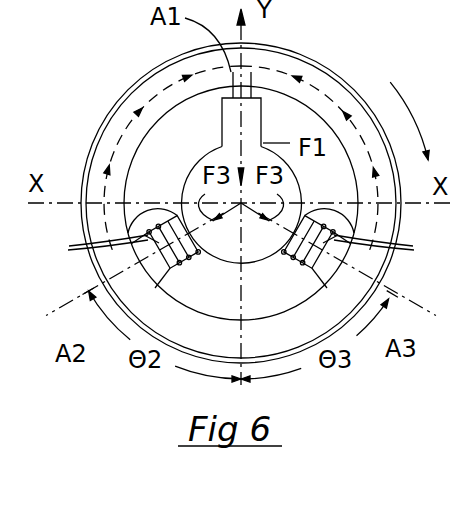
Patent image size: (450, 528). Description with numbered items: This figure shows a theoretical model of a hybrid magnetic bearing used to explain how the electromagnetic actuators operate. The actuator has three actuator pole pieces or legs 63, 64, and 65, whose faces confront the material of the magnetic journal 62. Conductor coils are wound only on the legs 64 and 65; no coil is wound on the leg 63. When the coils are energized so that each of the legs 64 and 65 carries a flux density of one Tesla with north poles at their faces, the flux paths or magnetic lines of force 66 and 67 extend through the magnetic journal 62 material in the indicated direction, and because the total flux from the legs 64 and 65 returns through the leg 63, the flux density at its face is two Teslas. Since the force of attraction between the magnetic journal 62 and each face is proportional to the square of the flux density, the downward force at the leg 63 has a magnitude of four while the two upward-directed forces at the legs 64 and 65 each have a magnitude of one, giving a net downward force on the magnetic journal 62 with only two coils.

The magnetic journal 62 is at (276, 340).
The actuator pole piece 63 is at (230, 120).
The actuator pole piece 64 is at (140, 212).
The actuator pole piece 65 is at (345, 212).
The flux path 66 is at (171, 83).
The flux path 67 is at (311, 78).